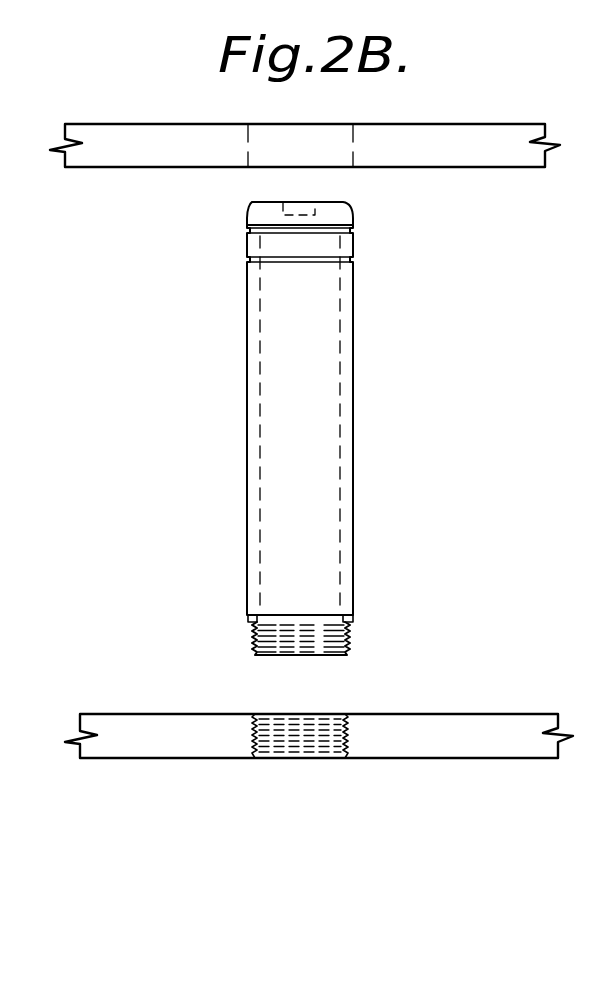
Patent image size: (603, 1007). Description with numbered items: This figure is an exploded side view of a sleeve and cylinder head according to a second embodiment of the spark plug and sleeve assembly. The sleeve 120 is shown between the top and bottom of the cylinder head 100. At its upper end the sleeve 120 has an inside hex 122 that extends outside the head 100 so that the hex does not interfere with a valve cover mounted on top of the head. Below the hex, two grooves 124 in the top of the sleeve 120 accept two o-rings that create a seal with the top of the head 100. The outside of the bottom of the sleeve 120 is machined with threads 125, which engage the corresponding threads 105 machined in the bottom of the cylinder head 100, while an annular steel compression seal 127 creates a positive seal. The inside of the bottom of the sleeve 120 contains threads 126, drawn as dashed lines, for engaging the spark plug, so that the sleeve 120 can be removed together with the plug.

The cylinder head 100 is at (497, 153).
The threads 105 is at (350, 740).
The sleeve 120 is at (314, 421).
The inside hex 122 is at (340, 211).
The grooves 124 is at (353, 230).
The threads 125 is at (349, 640).
The threads 126 is at (320, 622).
The annular steel compression seal 127 is at (247, 618).